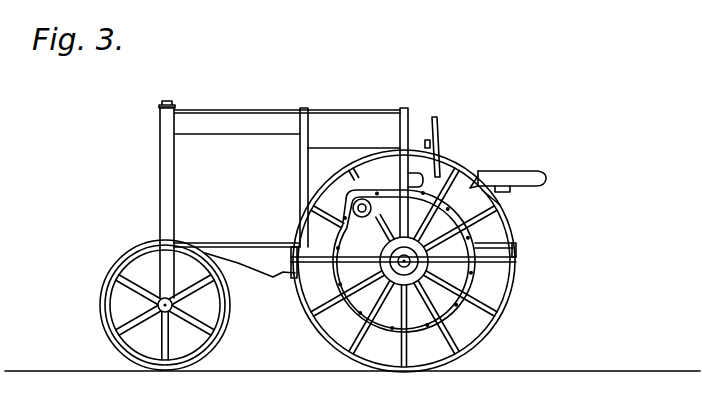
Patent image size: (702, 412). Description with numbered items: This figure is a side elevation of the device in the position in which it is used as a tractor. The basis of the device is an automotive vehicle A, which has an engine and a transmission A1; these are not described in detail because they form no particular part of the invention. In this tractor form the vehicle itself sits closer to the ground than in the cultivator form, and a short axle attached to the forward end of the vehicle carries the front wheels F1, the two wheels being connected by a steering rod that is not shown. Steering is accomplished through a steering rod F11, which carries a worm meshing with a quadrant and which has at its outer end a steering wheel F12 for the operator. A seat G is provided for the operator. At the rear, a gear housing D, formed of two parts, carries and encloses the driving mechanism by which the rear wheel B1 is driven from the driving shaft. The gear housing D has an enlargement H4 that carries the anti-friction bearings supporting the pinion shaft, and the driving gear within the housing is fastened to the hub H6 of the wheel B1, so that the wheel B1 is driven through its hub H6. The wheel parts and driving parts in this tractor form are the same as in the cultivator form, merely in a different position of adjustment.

The automotive vehicle A is at (222, 150).
The transmission A1 is at (421, 180).
The wheels F1 is at (118, 256).
The steering rod F11 is at (417, 150).
The steering wheel F12 is at (438, 123).
The seat G is at (505, 172).
The enlargement of the main gear housing H4 is at (353, 205).
The hub of the wheel H6 is at (483, 335).
The gear housing D is at (460, 278).
The wheel B1 is at (505, 305).